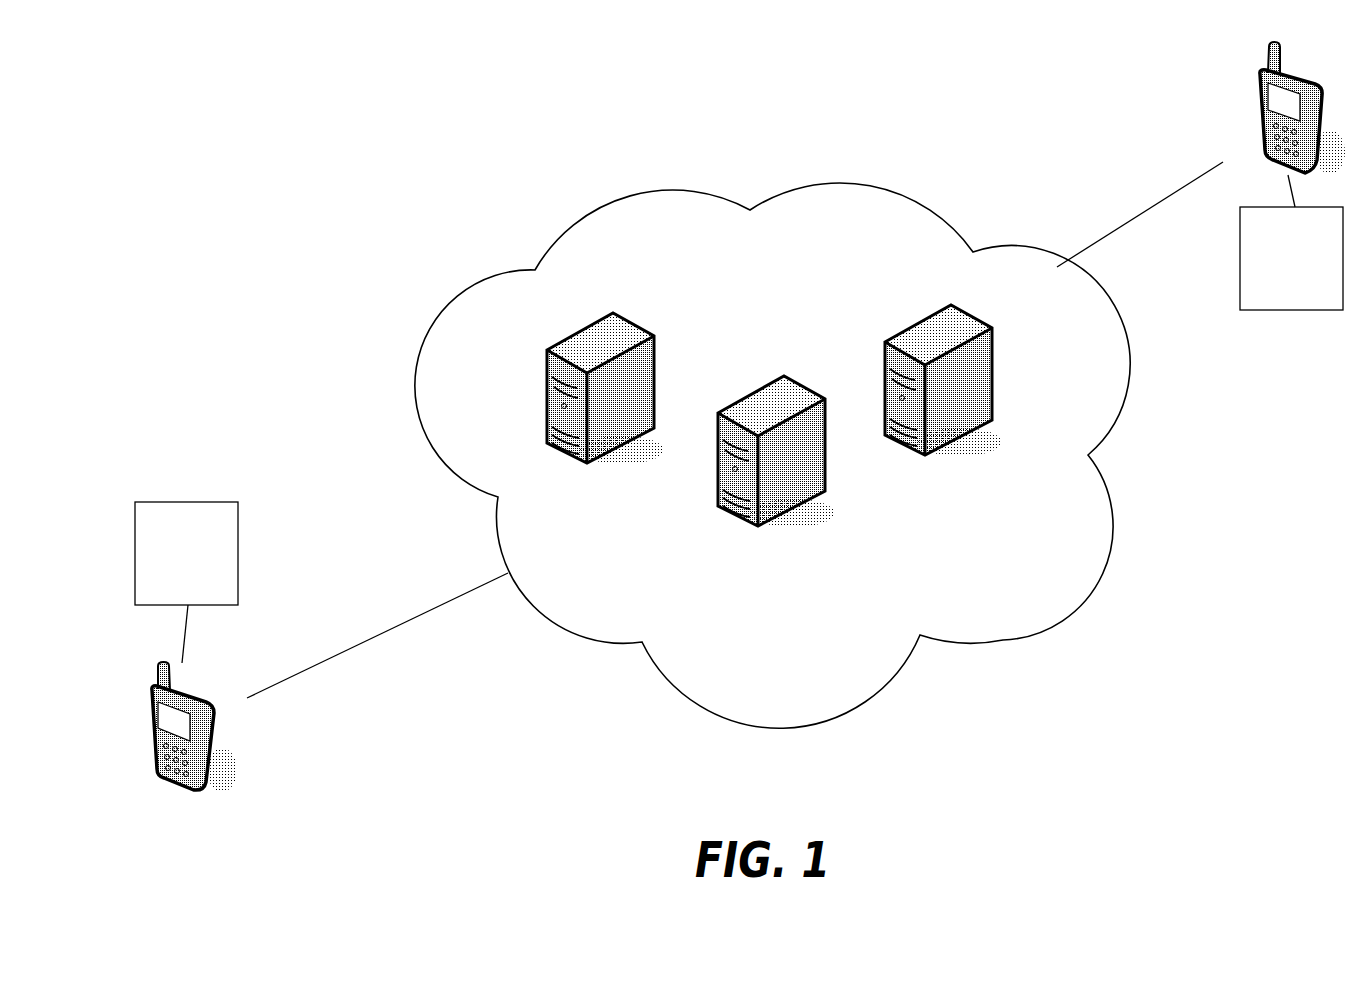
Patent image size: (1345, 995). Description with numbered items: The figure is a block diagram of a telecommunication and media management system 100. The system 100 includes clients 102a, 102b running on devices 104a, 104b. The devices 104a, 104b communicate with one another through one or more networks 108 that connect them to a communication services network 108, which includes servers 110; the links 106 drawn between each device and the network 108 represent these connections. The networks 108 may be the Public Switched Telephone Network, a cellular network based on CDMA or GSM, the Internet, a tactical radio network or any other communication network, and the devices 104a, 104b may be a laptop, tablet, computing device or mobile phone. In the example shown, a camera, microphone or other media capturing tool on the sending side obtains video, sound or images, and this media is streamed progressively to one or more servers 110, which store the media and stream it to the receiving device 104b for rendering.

The telecommunication and media management system 100 is at (378, 182).
The client 102a is at (186, 582).
The client 102b is at (1258, 69).
The device 104a is at (150, 743).
The device 104b is at (1320, 270).
The communication link 106 is at (393, 628).
The network 108 is at (1003, 640).
The server 110 is at (601, 312).